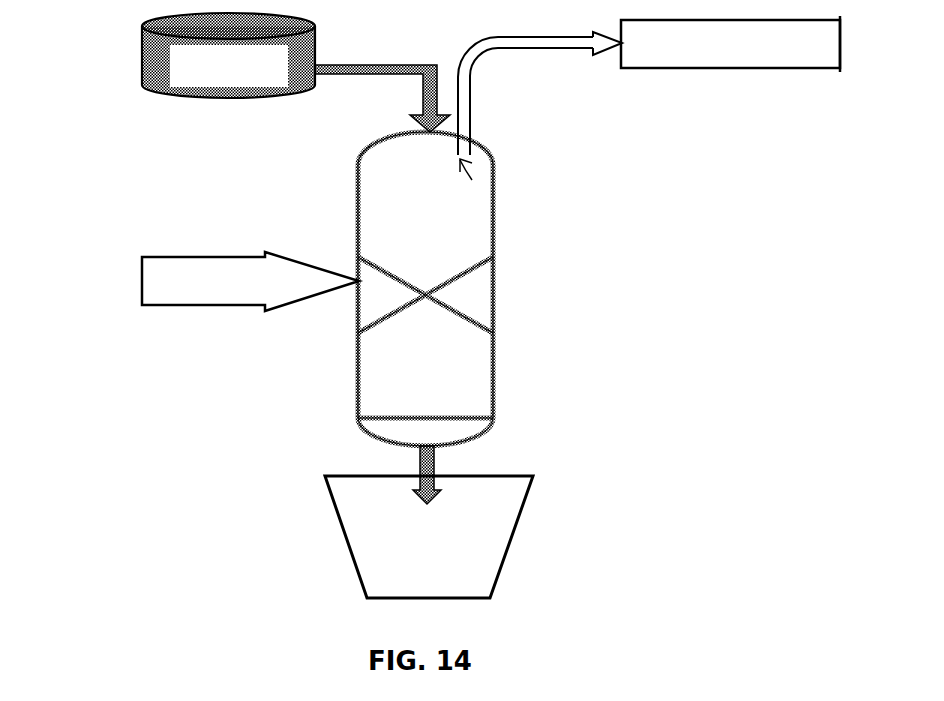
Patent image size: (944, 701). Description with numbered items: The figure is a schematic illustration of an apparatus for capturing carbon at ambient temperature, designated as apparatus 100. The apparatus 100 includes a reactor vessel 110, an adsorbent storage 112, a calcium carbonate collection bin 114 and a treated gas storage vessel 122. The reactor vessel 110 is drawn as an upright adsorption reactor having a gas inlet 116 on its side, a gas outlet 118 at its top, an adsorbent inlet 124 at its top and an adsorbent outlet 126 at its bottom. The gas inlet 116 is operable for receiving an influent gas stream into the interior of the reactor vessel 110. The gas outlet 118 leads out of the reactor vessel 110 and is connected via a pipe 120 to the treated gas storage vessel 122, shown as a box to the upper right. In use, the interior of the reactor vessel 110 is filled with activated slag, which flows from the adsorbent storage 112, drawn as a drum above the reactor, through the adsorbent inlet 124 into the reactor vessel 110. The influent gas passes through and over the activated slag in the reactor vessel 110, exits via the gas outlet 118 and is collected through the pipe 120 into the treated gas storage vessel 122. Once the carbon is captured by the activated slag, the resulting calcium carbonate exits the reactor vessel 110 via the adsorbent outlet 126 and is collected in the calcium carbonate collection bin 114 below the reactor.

The apparatus for capturing carbon 100 is at (198, 419).
The reactor vessel 110 is at (480, 255).
The adsorbent storage 112 is at (155, 50).
The calcium carbonate collection bin 114 is at (492, 535).
The gas inlet 116 is at (357, 285).
The gas outlet 118 is at (472, 180).
The pipe 120 is at (570, 44).
The treated gas storage vessel 122 is at (752, 58).
The adsorbent inlet 124 is at (413, 125).
The adsorbent outlet 126 is at (432, 440).